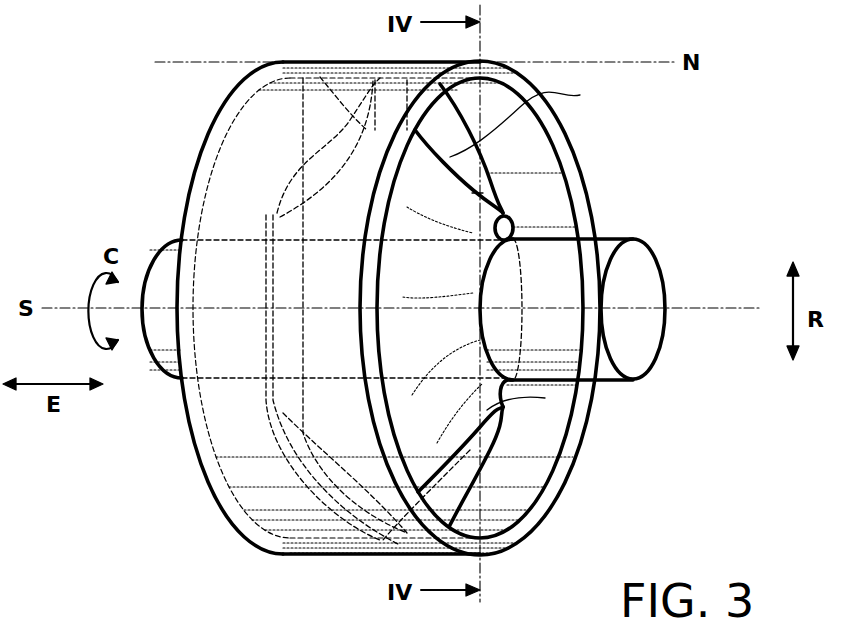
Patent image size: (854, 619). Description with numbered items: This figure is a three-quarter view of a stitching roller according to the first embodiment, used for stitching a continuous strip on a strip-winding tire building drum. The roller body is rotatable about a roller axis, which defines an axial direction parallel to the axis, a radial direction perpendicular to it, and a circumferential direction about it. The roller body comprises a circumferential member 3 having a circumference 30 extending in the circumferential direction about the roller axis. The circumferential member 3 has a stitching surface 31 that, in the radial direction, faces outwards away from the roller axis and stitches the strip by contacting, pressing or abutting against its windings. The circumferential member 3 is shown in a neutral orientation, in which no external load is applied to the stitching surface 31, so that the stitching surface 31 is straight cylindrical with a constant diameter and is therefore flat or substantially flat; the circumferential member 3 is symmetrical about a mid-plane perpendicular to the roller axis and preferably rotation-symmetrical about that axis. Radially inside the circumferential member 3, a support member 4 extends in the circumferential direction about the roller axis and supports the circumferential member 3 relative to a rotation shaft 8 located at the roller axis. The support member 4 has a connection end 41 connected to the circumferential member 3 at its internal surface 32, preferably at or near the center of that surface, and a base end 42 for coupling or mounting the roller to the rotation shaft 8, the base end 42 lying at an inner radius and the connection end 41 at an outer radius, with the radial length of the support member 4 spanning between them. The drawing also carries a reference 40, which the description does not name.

The circumferential member 3 is at (222, 508).
The circumference 30 is at (217, 427).
The stitching surface 31 is at (308, 557).
The internal surface 32 is at (532, 485).
The support member 4 is at (490, 187).
The blade 40 is at (463, 110).
The connection end 41 is at (383, 83).
The base end 42 is at (503, 207).
The rotation shaft 8 is at (643, 355).